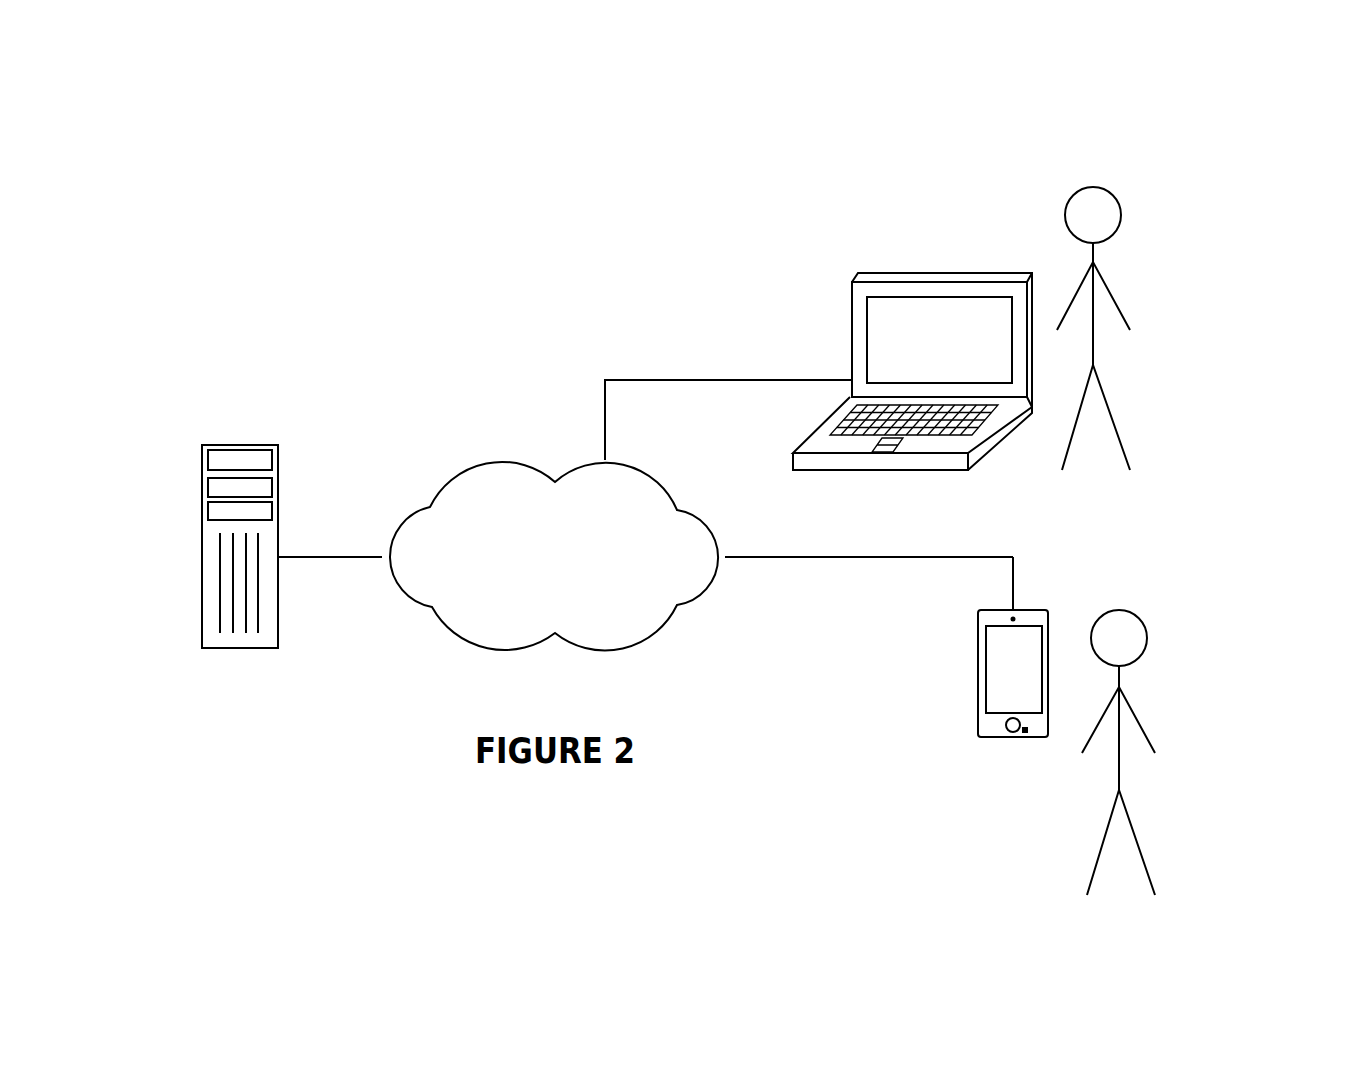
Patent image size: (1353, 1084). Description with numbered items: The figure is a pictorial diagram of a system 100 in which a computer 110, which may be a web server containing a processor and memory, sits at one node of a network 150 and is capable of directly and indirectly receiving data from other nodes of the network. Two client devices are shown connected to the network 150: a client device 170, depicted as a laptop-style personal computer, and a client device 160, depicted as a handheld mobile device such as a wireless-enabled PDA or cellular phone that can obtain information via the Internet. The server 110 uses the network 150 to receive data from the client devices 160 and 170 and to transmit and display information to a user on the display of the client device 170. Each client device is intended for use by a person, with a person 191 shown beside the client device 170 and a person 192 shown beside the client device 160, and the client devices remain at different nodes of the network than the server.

The system 100 is at (245, 144).
The computer 110 is at (202, 455).
The network 150 is at (503, 460).
The client device 160 is at (978, 633).
The client device 170 is at (852, 312).
The person 191 is at (1120, 273).
The person 192 is at (1145, 683).